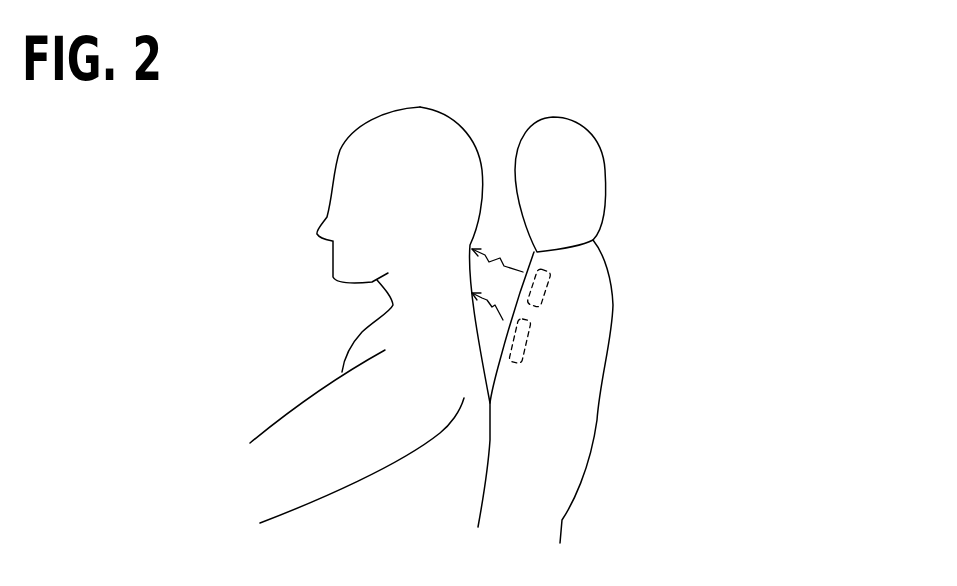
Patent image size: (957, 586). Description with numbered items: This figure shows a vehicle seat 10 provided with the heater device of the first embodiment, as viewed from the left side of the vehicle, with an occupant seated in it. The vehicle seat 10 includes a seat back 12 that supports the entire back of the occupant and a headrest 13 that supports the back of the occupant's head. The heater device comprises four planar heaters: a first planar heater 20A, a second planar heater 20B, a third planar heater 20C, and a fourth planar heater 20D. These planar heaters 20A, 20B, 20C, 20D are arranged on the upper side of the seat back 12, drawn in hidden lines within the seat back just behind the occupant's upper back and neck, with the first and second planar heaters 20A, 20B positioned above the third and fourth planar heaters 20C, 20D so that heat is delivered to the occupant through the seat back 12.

The vehicle seat 10 is at (641, 330).
The seat back 12 is at (612, 308).
The headrest 13 is at (598, 148).
The first planar heater 20A is at (668, 273).
The second planar heater 20B is at (552, 273).
The third planar heater 20C is at (651, 368).
The fourth planar heater 20D is at (651, 368).